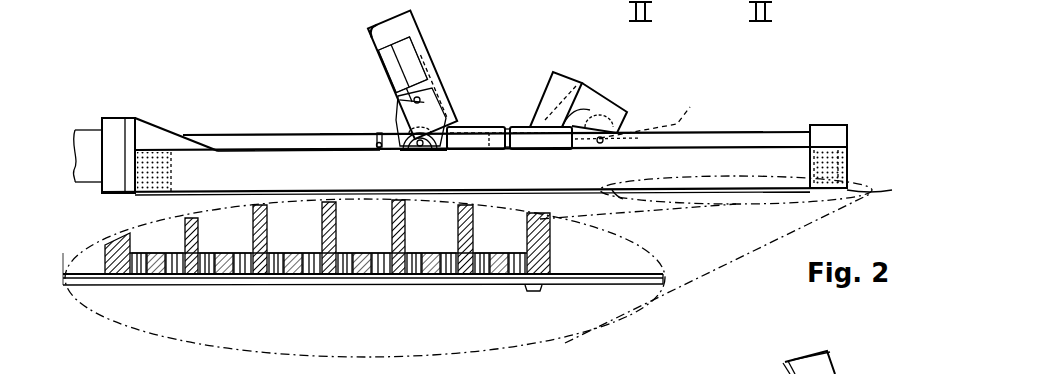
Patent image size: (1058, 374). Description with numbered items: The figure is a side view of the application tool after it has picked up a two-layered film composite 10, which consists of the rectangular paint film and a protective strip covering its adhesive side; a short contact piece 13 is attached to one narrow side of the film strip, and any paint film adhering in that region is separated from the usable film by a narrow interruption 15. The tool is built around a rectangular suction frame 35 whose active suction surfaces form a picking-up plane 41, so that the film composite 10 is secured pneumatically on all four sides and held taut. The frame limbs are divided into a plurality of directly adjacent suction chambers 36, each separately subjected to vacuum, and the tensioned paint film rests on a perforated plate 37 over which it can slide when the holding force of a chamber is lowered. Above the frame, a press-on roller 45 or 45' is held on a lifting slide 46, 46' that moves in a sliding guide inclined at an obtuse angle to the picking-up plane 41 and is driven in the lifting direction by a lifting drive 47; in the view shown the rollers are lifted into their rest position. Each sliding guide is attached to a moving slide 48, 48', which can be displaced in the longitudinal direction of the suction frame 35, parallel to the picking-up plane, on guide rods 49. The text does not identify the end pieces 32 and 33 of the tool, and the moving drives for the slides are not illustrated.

The two-layered film composite 10 is at (698, 190).
The contact piece 13 is at (888, 192).
The interruption 15 is at (536, 303).
The front end piece 32 is at (95, 157).
The guide rail 33 is at (240, 149).
The suction frame 35 is at (708, 175).
The suction chamber 36 is at (230, 222).
The perforated plate 37 is at (294, 263).
The picking-up plane 41 is at (620, 190).
The press-on roller 45 is at (380, 125).
The press-on roller 45' is at (657, 112).
The lifting slide 46 is at (424, 73).
The lifting slide 46' is at (590, 103).
The lifting drive 47 is at (400, 67).
The moving slide 48 is at (478, 100).
The moving slide 48' is at (541, 92).
The guide rods 49 is at (282, 140).